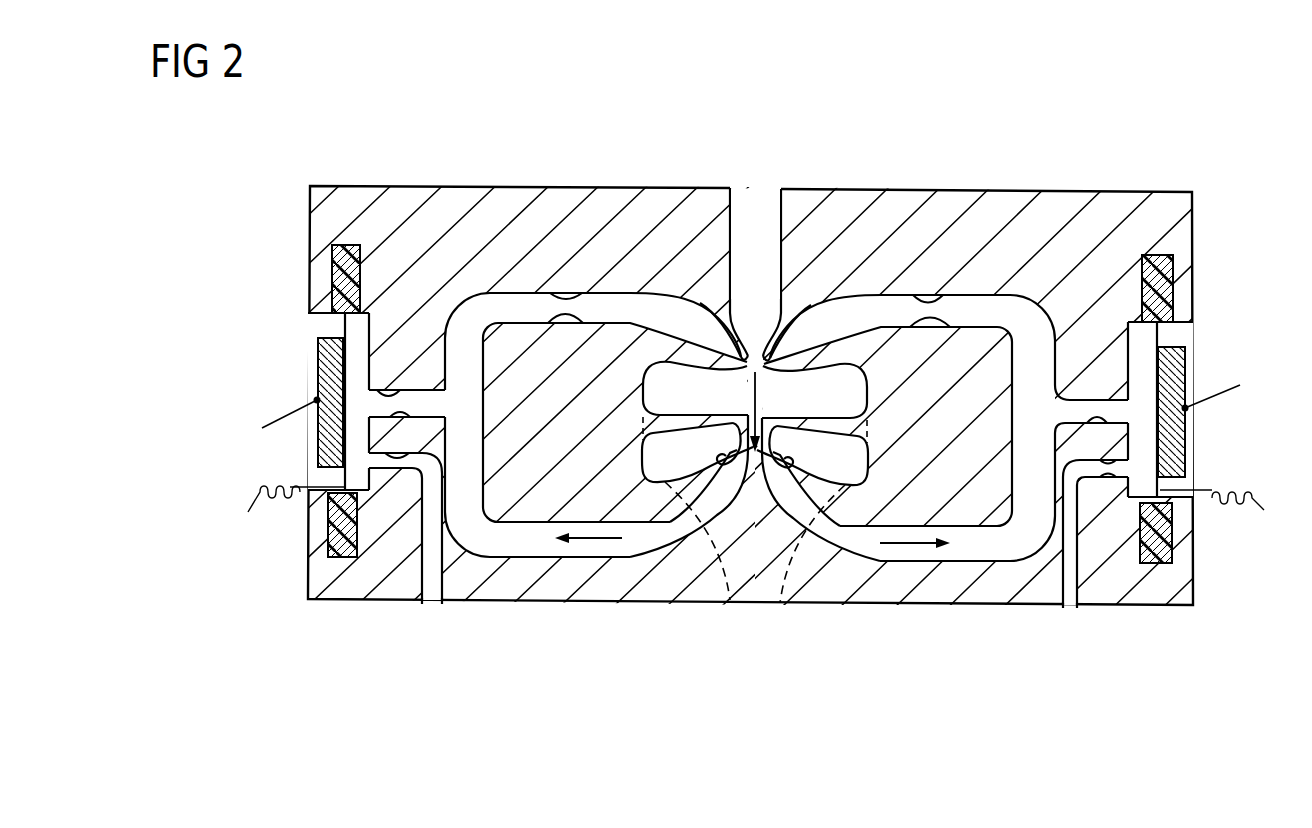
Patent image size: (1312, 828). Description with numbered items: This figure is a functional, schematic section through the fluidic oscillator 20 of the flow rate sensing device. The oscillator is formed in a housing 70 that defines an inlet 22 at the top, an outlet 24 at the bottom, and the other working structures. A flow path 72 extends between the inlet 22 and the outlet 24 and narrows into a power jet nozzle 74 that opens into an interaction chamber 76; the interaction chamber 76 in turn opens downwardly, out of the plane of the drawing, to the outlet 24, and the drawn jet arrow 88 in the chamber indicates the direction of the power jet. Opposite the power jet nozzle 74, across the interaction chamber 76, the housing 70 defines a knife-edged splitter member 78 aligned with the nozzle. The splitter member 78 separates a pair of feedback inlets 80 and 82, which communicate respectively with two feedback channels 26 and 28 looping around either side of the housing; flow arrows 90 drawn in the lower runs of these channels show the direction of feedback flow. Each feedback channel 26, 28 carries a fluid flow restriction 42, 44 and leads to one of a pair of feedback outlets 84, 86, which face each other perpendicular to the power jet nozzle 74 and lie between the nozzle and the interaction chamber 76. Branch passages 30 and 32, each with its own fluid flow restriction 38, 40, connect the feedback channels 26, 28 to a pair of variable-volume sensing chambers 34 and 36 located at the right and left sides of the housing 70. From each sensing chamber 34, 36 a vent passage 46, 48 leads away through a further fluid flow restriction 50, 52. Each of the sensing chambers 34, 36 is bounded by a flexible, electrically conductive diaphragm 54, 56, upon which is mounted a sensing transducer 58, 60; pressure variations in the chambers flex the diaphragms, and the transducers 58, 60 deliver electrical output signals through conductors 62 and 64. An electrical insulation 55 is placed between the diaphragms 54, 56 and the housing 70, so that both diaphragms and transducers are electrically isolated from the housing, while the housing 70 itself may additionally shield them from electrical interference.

The fluidic oscillator 20 is at (656, 374).
The inlet 22 is at (780, 205).
The outlet 24 is at (780, 603).
The feedback channel 26 is at (1048, 381).
The feedback channel 28 is at (486, 388).
The branch passage 30 is at (1062, 430).
The branch passage 32 is at (428, 395).
The variable-volume sensing chamber 34 is at (1130, 547).
The variable-volume sensing chamber 36 is at (378, 418).
The fluid flow restriction 38 is at (1085, 410).
The fluid flow restriction 40 is at (382, 396).
The fluid flow restriction 42 is at (940, 318).
The fluid flow restriction 44 is at (575, 318).
The vent passage 46 is at (1063, 605).
The vent passage 48 is at (423, 600).
The fluid flow restriction 50 is at (1095, 532).
The fluid flow restriction 52 is at (407, 465).
The diaphragm 54 is at (1182, 330).
The electrical insulation 55 is at (330, 556).
The diaphragm 56 is at (342, 322).
The sensing transducer 58 is at (1188, 408).
The sensing transducer 60 is at (325, 380).
The conductor 62 is at (1243, 428).
The conductor 64 is at (280, 430).
The housing 70 is at (1128, 195).
The flow path 72 is at (772, 243).
The power jet nozzle 74 is at (746, 340).
The interaction chamber 76 is at (735, 417).
The knife-edged splitter member 78 is at (760, 452).
The feedback inlet 80 is at (796, 462).
The feedback inlet 82 is at (716, 462).
The feedback outlet 84 is at (772, 348).
The feedback outlet 86 is at (738, 348).
The jet flow arrow 88 is at (760, 402).
The flow direction arrows 90 is at (622, 538).